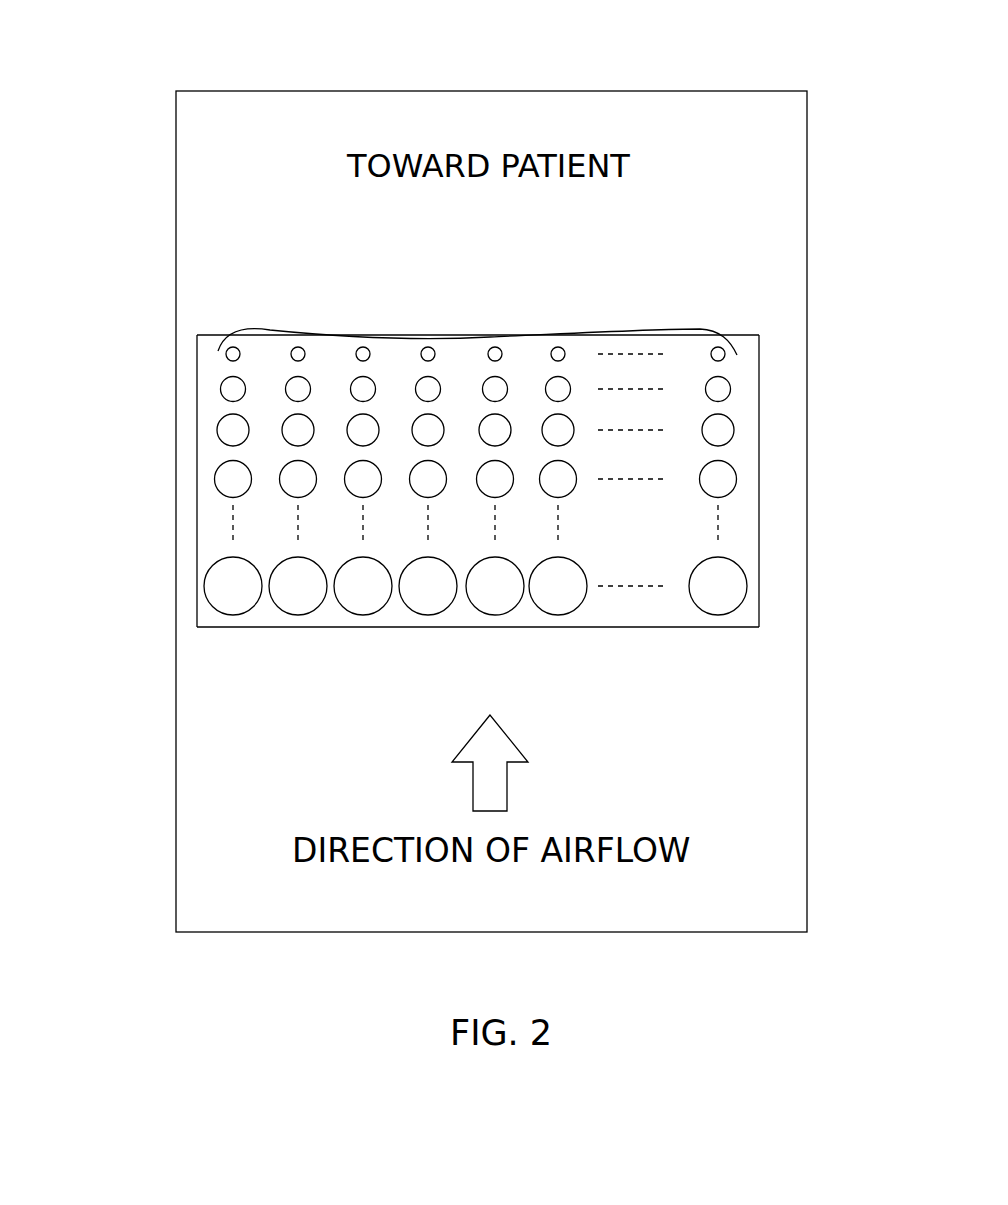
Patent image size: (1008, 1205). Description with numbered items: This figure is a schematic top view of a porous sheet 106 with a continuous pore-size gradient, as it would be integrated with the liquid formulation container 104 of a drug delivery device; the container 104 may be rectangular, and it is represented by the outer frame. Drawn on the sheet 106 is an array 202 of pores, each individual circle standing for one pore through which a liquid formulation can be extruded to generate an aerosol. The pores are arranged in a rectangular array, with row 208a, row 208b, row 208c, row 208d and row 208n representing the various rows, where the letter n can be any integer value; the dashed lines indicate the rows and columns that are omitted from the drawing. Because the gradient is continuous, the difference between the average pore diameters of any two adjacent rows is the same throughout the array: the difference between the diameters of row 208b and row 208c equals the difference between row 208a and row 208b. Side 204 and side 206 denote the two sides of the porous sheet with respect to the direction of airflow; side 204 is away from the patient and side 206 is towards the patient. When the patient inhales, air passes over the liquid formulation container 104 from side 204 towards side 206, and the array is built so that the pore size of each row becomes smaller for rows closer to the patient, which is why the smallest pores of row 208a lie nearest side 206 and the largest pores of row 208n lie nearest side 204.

The liquid formulation container 104 is at (388, 91).
The porous sheet 106 is at (469, 481).
The array of pores 202 is at (402, 441).
The side away from the patient 204 is at (473, 628).
The side towards the patient 206 is at (436, 335).
The row 208a is at (226, 354).
The row 208b is at (220, 389).
The row 208c is at (217, 430).
The row 208d is at (214, 479).
The row 208n is at (204, 588).